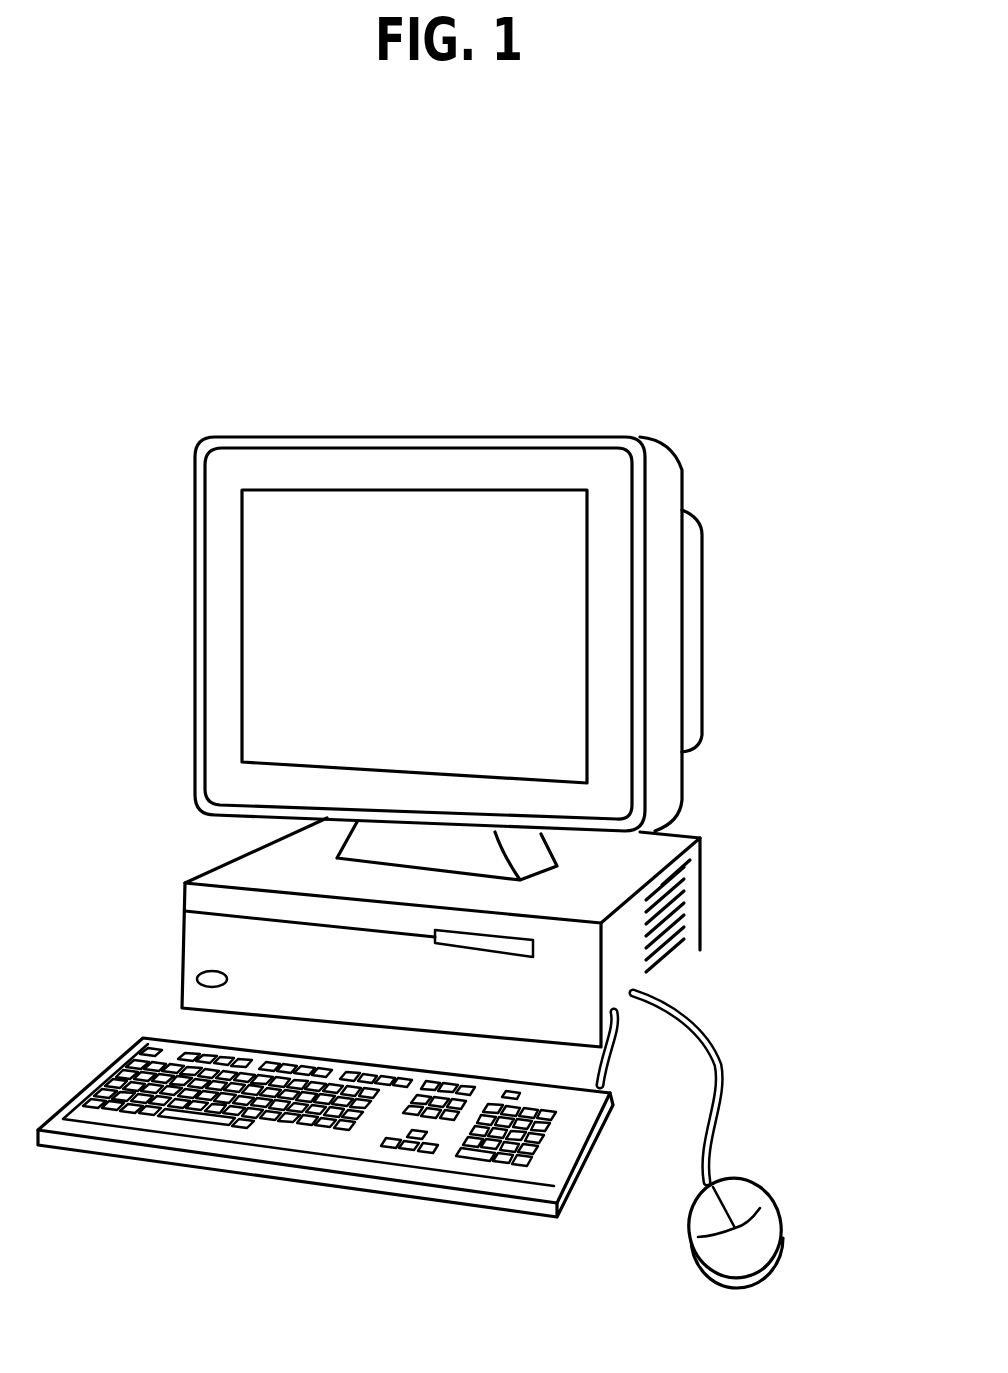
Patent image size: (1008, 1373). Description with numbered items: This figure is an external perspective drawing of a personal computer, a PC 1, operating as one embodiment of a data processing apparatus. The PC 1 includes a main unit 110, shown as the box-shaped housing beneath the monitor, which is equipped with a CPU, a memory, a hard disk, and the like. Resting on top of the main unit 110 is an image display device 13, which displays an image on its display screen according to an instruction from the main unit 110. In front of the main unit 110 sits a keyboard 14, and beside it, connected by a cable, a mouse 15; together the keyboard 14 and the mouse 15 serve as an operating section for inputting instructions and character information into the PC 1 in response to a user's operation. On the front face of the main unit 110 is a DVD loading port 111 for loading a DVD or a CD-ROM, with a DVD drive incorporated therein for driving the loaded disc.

The PC 1 is at (505, 378).
The image display device 13 is at (657, 555).
The main unit 110 is at (680, 925).
The DVD loading port 111 is at (185, 911).
The keyboard 14 is at (193, 1163).
The mouse 15 is at (752, 1242).